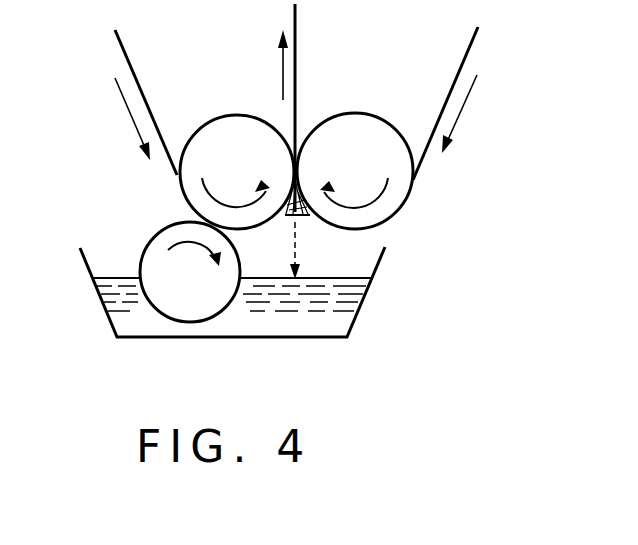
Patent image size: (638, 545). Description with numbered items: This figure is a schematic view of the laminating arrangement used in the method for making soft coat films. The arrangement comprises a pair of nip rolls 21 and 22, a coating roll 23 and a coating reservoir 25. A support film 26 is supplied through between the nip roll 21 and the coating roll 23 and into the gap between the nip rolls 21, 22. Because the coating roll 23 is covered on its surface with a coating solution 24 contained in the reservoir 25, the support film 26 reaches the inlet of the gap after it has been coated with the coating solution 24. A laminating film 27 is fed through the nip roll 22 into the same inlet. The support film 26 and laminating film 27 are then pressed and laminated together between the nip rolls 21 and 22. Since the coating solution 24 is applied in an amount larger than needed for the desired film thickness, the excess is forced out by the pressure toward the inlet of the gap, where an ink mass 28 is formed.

The nip roll 21 is at (230, 115).
The nip roll 22 is at (360, 113).
The coating roll 23 is at (160, 227).
The coating solution 24 is at (342, 323).
The coating reservoir 25 is at (97, 310).
The support film 26 is at (118, 48).
The laminating film 27 is at (467, 58).
The ink mass 28 is at (303, 216).